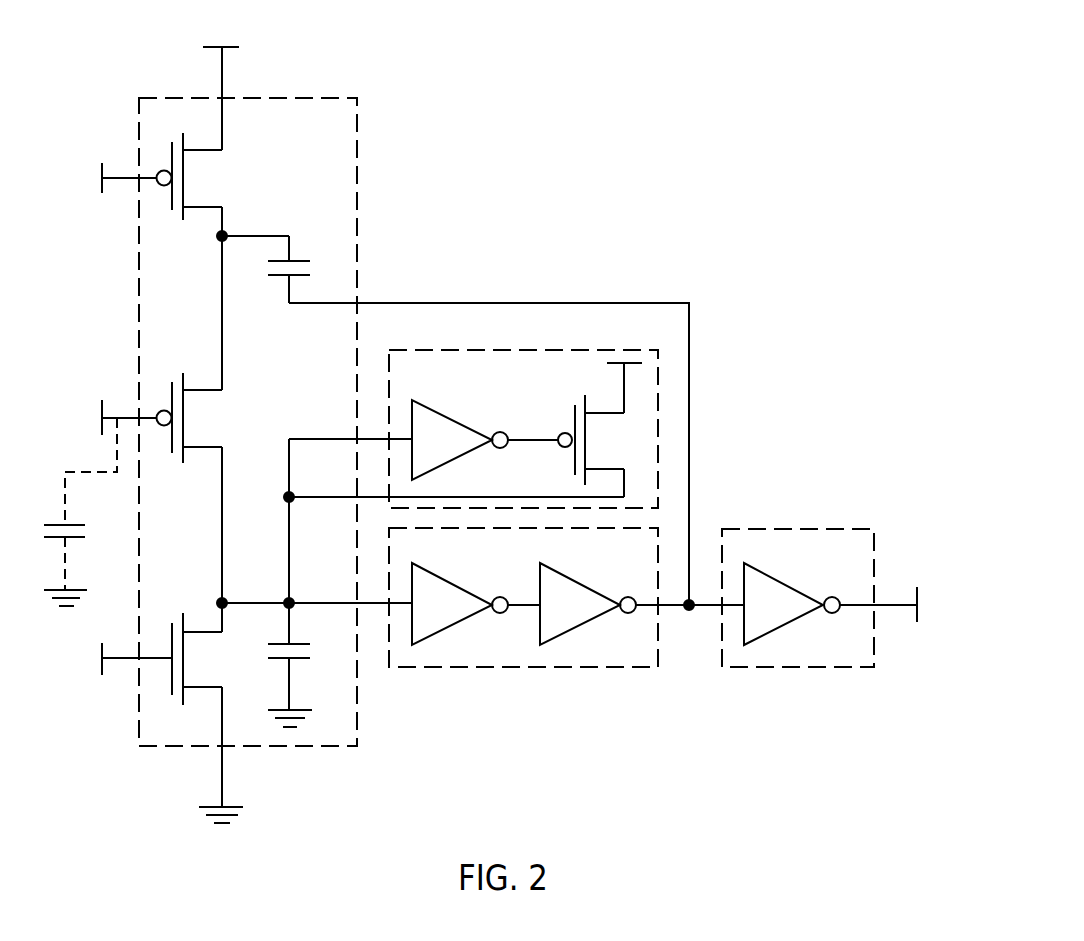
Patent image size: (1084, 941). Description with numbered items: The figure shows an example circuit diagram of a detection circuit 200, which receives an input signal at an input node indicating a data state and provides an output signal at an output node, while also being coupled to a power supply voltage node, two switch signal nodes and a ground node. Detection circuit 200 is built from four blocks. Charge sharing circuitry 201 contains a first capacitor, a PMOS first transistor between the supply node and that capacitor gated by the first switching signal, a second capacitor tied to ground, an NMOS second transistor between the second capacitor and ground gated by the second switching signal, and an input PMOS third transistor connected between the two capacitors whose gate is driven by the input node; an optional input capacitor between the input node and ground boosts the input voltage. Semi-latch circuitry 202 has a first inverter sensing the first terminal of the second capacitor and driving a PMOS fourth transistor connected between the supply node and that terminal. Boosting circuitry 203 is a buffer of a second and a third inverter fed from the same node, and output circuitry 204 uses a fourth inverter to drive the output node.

The detection circuit 200 is at (792, 80).
The charge sharing circuitry 201 is at (248, 98).
The semi-latch circuitry 202 is at (523, 350).
The boosting circuitry 203 is at (523, 667).
The output circuitry 204 is at (797, 667).